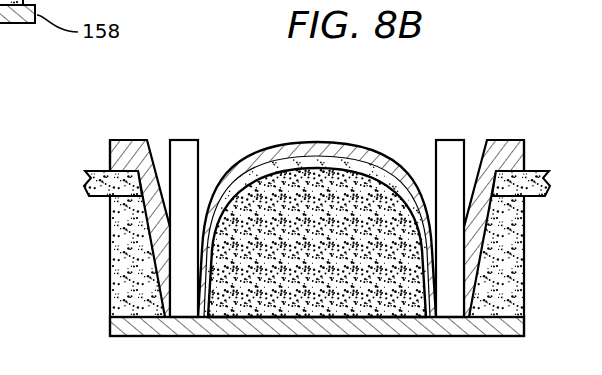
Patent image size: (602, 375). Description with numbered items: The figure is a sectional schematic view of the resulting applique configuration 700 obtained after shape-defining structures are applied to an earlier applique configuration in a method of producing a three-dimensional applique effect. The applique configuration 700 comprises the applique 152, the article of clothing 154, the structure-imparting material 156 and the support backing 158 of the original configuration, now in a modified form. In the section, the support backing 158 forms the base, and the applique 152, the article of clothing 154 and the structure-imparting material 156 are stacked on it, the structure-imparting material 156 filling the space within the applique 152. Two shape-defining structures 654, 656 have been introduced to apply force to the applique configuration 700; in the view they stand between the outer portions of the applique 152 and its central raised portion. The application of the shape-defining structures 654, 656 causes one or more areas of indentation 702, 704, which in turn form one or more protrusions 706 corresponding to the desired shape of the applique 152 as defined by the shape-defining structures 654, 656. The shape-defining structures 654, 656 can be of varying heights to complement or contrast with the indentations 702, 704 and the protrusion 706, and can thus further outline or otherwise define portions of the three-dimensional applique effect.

The applique configuration 700 is at (442, 80).
The applique 152 is at (109, 158).
The article of clothing 154 is at (89, 188).
The structure-imparting material 156 is at (110, 252).
The support backing 158 is at (110, 318).
The shape-defining structure 654 is at (183, 140).
The shape-defining structure 656 is at (452, 140).
The area of indentation 702 is at (215, 163).
The area of indentation 704 is at (427, 166).
The protrusion 706 is at (319, 175).